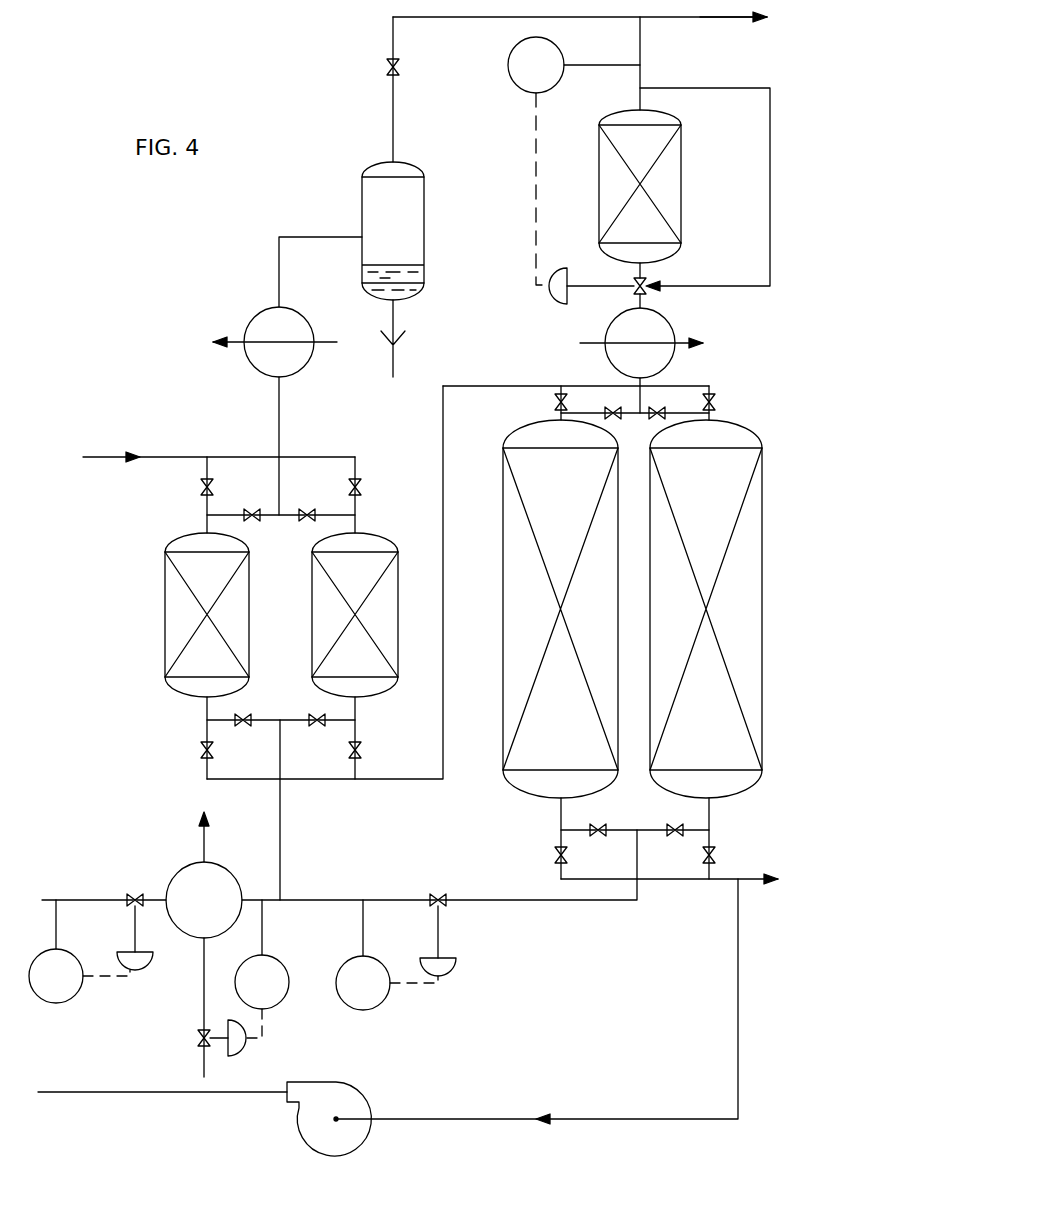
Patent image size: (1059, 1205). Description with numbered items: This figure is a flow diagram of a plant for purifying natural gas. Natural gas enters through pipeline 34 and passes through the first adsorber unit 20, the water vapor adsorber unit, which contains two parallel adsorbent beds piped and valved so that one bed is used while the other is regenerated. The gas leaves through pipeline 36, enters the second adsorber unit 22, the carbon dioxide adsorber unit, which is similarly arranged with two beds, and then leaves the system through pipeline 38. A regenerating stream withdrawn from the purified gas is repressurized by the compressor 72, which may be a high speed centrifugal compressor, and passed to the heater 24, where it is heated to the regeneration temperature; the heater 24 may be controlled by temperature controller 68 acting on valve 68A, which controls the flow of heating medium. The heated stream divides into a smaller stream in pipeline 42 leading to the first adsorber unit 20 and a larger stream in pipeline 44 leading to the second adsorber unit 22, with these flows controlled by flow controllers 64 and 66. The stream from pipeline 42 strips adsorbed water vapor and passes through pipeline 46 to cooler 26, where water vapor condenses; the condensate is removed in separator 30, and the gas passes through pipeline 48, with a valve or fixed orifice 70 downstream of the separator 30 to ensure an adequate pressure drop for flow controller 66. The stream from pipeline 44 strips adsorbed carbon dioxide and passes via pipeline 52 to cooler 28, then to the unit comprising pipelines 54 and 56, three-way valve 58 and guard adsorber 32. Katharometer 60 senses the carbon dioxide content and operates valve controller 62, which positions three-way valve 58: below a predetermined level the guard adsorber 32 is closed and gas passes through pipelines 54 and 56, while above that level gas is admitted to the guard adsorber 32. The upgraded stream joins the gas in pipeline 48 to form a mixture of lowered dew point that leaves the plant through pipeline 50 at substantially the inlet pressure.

The first adsorber unit 20 is at (165, 612).
The second adsorber unit 22 is at (648, 604).
The heater 24 is at (223, 872).
The cooler 26 is at (310, 370).
The cooler 28 is at (672, 358).
The separator 30 is at (424, 228).
The guard adsorber 32 is at (681, 181).
The pipeline 34 is at (185, 458).
The pipeline 36 is at (444, 605).
The pipeline 38 is at (746, 878).
The pipeline 42 is at (282, 825).
The pipeline 44 is at (638, 903).
The pipeline 46 is at (278, 412).
The pipeline 48 is at (503, 22).
The pipeline 50 is at (706, 27).
The pipeline 52 is at (636, 386).
The pipeline 54 is at (770, 233).
The pipeline 56 is at (641, 53).
The three-way valve 58 is at (653, 294).
The Katharometer 60 is at (560, 88).
The valve controller 62 is at (547, 304).
The flow controller 64 is at (72, 1002).
The flow controller 66 is at (380, 1003).
The temperature controller 68 is at (282, 1000).
The valve 68A is at (196, 1040).
The valve or fixed orifice 70 is at (387, 67).
The compressor 72 is at (360, 1091).